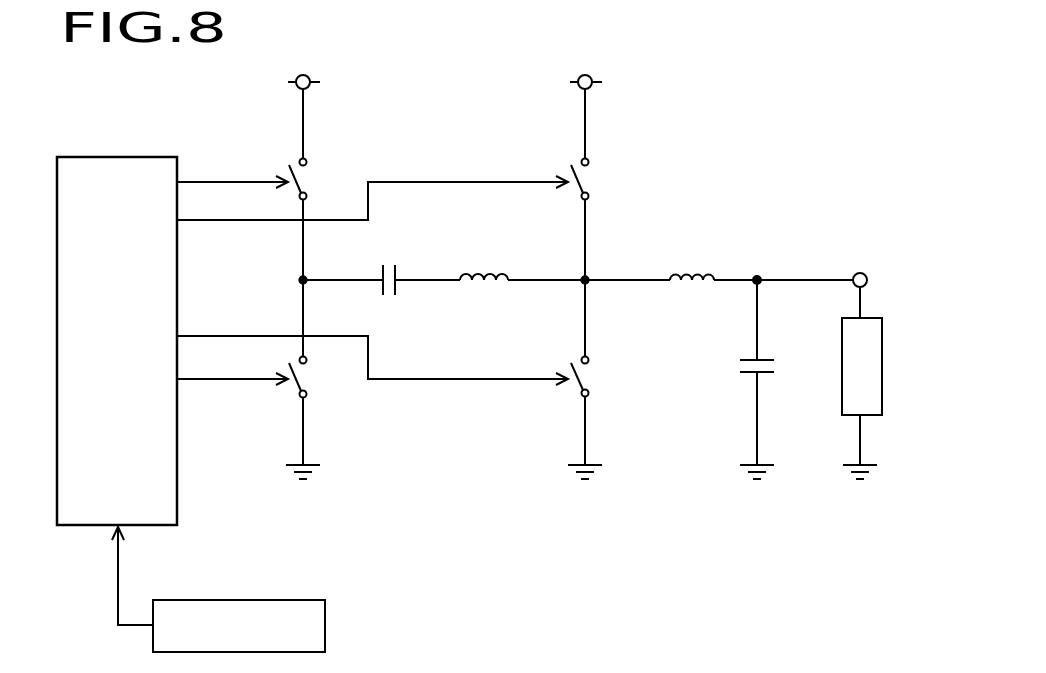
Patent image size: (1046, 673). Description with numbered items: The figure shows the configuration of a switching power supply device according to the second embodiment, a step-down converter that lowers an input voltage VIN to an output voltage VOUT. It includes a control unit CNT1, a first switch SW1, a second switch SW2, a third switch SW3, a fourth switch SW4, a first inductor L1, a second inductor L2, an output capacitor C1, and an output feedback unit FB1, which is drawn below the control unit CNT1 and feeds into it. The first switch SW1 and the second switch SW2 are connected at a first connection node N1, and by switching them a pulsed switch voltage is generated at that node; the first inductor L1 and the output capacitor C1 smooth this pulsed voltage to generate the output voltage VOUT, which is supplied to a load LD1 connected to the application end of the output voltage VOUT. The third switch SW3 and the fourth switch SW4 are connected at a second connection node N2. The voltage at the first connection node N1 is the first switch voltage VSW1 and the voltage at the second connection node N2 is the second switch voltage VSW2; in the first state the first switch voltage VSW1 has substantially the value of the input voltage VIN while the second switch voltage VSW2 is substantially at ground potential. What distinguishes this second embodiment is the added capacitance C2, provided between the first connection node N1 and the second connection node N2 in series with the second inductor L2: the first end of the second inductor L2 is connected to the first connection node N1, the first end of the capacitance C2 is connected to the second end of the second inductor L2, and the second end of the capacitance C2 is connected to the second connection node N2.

The control unit CNT1 is at (118, 157).
The first switch SW1 is at (565, 158).
The second switch SW2 is at (572, 393).
The third switch SW3 is at (285, 158).
The fourth switch SW4 is at (287, 393).
The output capacitor C1 is at (775, 366).
The capacitance C2 is at (388, 260).
The first inductor L1 is at (690, 270).
The second inductor L2 is at (484, 270).
The first connection node N1 is at (581, 285).
The second connection node N2 is at (299, 285).
The first switch voltage VSW1 is at (591, 264).
The second switch voltage VSW2 is at (307, 264).
The input voltage VIN is at (446, 101).
The output voltage VOUT is at (860, 264).
The load LD1 is at (884, 366).
The output feedback unit FB1 is at (327, 627).